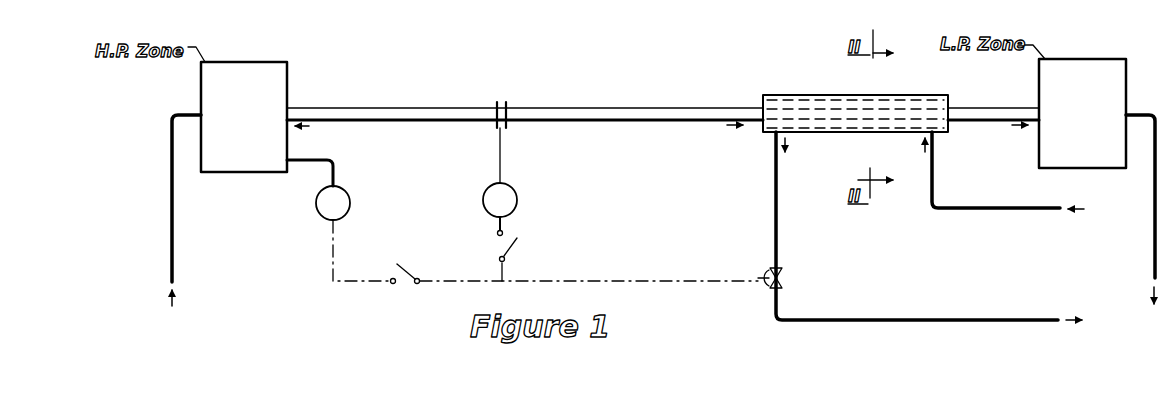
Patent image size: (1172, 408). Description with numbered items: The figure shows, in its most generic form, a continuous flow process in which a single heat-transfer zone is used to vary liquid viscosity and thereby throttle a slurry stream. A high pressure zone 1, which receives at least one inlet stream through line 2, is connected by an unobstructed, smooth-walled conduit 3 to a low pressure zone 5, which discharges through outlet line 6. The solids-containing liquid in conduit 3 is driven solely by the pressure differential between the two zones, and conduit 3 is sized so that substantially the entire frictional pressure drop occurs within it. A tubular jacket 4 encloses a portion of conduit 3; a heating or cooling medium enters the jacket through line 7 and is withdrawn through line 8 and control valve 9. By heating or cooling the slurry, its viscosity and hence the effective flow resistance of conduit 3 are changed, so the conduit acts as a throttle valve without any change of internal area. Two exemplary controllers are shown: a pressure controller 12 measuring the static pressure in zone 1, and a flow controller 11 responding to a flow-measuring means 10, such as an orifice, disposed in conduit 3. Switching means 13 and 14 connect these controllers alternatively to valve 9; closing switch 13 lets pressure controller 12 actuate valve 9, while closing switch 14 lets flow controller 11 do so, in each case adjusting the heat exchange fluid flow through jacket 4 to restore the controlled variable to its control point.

The high pressure zone 1 is at (262, 116).
The inlet line 2 is at (164, 210).
The conduit 3 is at (663, 115).
The tubular jacket 4 is at (855, 97).
The low pressure zone 5 is at (1100, 113).
The outlet line 6 is at (1132, 209).
The heat exchange fluid inlet line 7 is at (1004, 188).
The heat exchange fluid outlet line 8 is at (909, 226).
The control valve 9 is at (787, 269).
The flow-measuring means 10 is at (523, 102).
The flow controller 11 is at (522, 182).
The pressure controller 12 is at (309, 207).
The switch 13 is at (420, 266).
The switch 14 is at (514, 248).